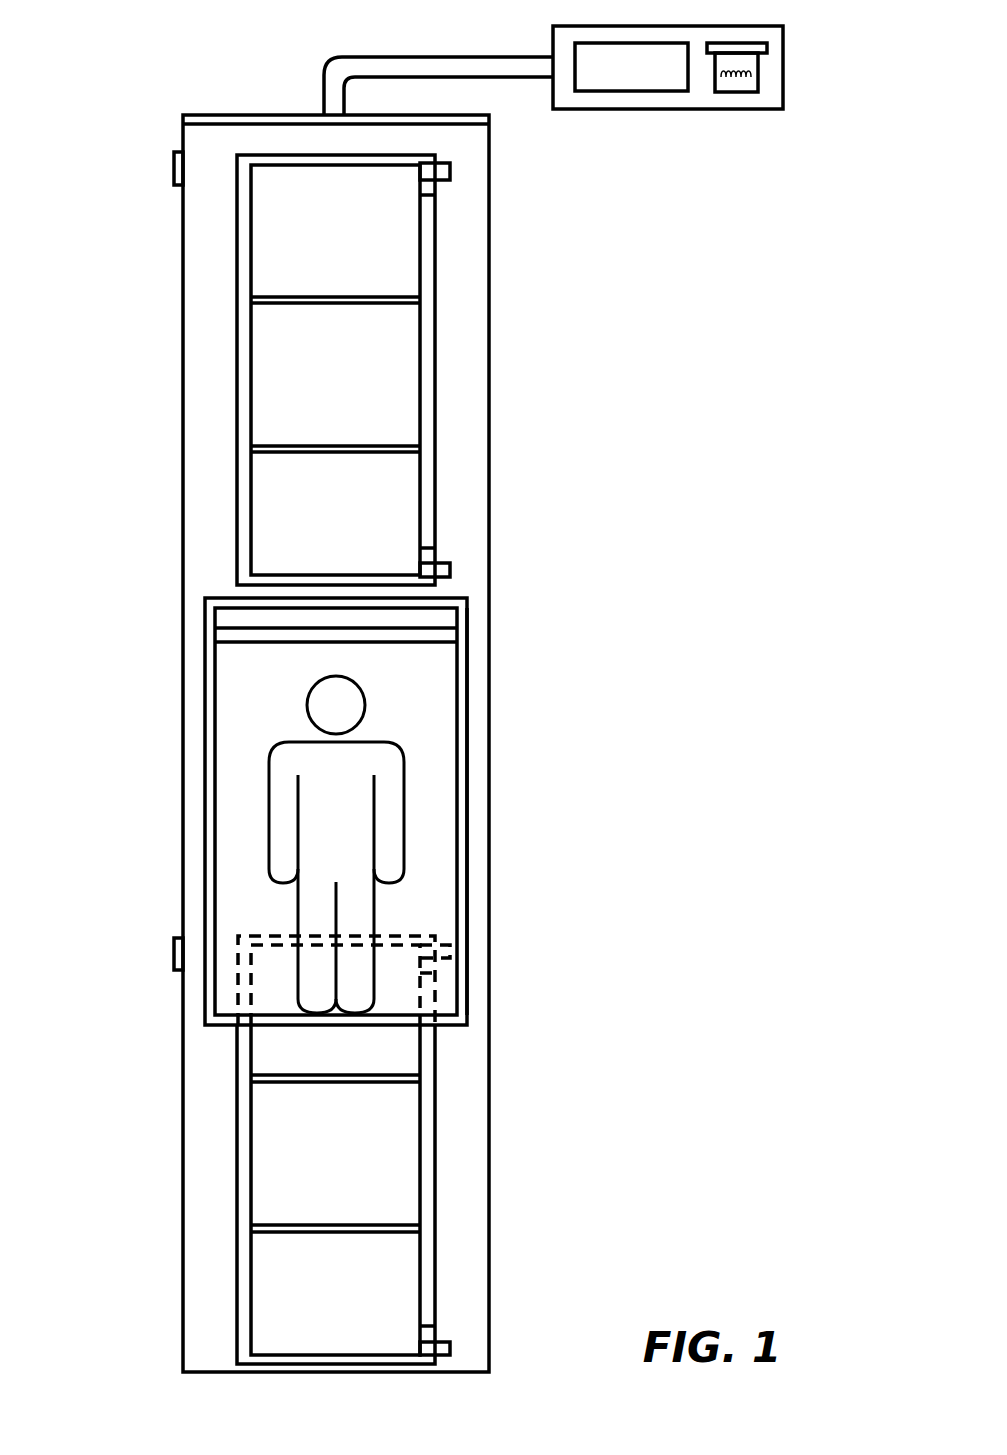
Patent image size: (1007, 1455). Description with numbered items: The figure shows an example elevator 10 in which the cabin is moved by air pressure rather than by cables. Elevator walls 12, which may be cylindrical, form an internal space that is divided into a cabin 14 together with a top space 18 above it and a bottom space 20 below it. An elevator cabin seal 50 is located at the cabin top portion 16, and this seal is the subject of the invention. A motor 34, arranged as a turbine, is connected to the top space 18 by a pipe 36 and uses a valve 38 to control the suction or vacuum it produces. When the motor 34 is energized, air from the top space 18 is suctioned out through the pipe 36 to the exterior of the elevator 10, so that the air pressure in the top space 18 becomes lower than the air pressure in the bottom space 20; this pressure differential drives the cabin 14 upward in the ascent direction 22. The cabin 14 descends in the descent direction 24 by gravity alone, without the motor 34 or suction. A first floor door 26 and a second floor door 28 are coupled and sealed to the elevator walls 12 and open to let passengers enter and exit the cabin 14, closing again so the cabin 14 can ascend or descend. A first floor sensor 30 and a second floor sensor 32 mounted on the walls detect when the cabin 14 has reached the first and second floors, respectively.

The elevator 10 is at (168, 62).
The elevator walls 12 is at (180, 255).
The cabin 14 is at (400, 810).
The cabin top portion 16 is at (470, 636).
The top space 18 is at (342, 353).
The bottom space 20 is at (339, 1154).
The ascent direction 22 is at (129, 565).
The descent direction 24 is at (106, 563).
The first floor door 26 is at (232, 1161).
The second floor door 28 is at (234, 382).
The first floor sensor 30 is at (172, 951).
The second floor sensor 32 is at (172, 163).
The motor 34 is at (624, 93).
The pipe 36 is at (322, 60).
The valve 38 is at (739, 94).
The elevator cabin seal 50 is at (432, 618).